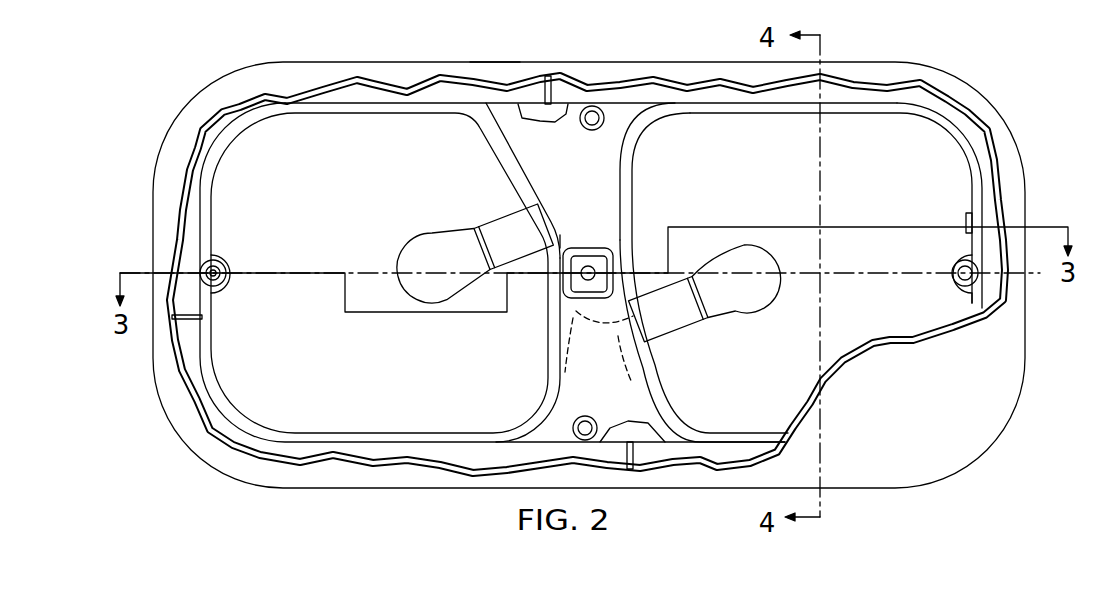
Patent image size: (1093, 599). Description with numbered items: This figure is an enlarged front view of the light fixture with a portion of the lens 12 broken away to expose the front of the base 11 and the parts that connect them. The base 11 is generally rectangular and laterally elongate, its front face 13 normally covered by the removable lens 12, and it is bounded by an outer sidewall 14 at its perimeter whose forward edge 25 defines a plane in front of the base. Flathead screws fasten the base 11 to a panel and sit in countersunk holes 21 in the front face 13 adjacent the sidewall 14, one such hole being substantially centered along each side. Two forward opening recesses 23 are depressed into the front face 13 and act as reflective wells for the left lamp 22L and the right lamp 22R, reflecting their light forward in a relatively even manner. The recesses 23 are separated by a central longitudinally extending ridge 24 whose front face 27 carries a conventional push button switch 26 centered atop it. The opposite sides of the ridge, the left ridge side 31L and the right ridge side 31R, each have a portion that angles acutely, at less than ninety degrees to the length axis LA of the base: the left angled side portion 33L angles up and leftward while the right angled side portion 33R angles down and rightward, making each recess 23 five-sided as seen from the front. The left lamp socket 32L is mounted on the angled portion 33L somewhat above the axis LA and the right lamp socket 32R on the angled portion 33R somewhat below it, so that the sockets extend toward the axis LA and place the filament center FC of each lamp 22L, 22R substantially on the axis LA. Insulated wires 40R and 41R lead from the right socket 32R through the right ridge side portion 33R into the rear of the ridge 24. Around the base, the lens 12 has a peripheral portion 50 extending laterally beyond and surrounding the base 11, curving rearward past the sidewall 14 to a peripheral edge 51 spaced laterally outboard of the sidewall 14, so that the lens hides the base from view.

The base 11 is at (240, 108).
The lens 12 is at (300, 68).
The front face 13 is at (636, 120).
The outer sidewall 14 is at (355, 103).
The countersunk holes 21 is at (219, 262).
The left lamp 22L is at (420, 234).
The right lamp 22R is at (748, 246).
The recesses 23 is at (591, 273).
The central ridge 24 is at (600, 158).
The forward edge 25 is at (372, 107).
The push button switch 26 is at (565, 280).
The front face of the ridge 27 is at (597, 222).
The left ridge side 31L is at (547, 365).
The right ridge side 31R is at (637, 146).
The left lamp socket 32L is at (473, 222).
The right lamp socket 32R is at (690, 312).
The left angled side portion 33L is at (525, 190).
The right angled side portion 33R is at (655, 380).
The insulated wire 40R is at (604, 365).
The insulated wire 41R is at (600, 350).
The peripheral portion 50 is at (450, 70).
The peripheral edge 51 is at (497, 62).
The filament center FC is at (407, 274).
The length axis LA is at (863, 273).